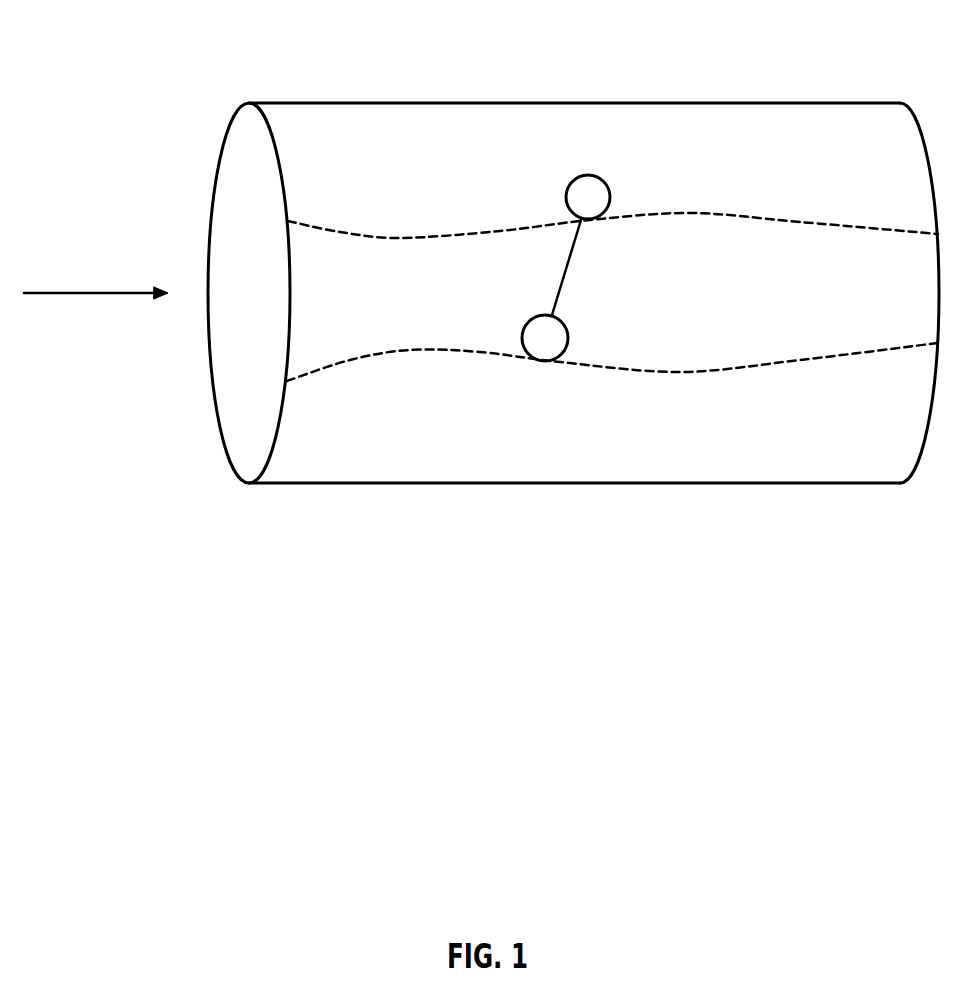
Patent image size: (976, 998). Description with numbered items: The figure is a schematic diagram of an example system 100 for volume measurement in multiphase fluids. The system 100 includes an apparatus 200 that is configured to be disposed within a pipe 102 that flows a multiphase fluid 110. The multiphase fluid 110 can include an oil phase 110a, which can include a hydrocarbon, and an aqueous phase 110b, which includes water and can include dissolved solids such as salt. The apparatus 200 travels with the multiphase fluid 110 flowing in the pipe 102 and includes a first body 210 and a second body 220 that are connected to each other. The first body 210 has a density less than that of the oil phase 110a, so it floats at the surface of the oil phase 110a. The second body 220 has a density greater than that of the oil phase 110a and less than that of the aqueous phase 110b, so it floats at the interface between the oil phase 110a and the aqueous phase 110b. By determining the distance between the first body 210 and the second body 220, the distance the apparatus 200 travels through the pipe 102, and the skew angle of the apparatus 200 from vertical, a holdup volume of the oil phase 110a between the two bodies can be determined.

The system 100 is at (507, 915).
The pipe 102 is at (302, 103).
The multiphase fluid 110 is at (112, 293).
The oil phase 110a is at (385, 308).
The aqueous phase 110b is at (385, 435).
The apparatus 200 is at (598, 199).
The first body 210 is at (612, 193).
The second body 220 is at (568, 340).